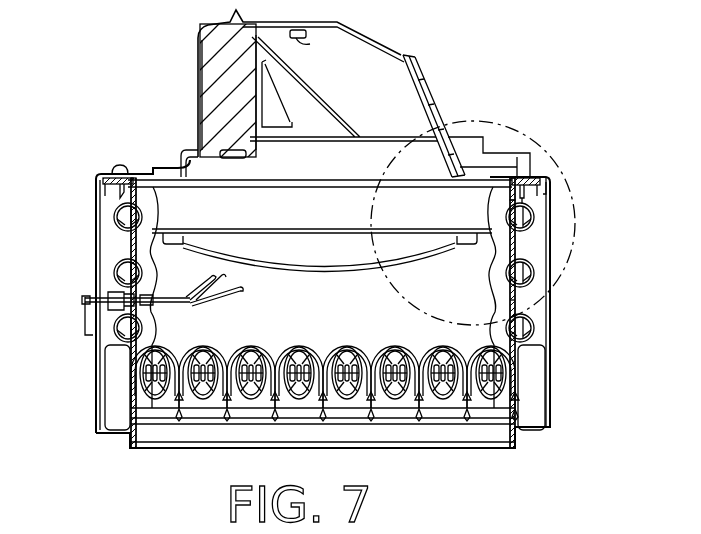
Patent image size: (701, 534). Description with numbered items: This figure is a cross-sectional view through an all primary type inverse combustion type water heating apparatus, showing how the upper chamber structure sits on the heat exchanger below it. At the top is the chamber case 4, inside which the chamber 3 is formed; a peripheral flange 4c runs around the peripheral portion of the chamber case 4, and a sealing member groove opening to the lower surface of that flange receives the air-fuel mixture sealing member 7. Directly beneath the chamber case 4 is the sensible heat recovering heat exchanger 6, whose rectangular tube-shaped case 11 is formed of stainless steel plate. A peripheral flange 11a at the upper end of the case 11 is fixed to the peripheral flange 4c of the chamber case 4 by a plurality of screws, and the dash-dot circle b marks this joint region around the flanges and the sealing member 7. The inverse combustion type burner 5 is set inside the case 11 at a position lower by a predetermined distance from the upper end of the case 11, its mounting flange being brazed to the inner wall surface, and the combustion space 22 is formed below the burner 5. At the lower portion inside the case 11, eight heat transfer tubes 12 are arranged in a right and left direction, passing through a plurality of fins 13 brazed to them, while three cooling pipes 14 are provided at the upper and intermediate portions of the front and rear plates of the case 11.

The chamber 3 is at (347, 172).
The chamber case 4 is at (428, 85).
The peripheral flange 4c is at (523, 182).
The air-fuel mixture sealing member 7 is at (537, 177).
The enlarged region b is at (497, 123).
The case 11 is at (523, 297).
The sensible heat recovering heat exchanger 6 is at (558, 321).
The peripheral flange 11a is at (530, 190).
The cooling pipe 14 is at (114, 215).
The fin 13 is at (247, 349).
The heat transfer tube 12 is at (441, 350).
The combustion space 22 is at (353, 322).
The inverse combustion type burner 5 is at (351, 272).